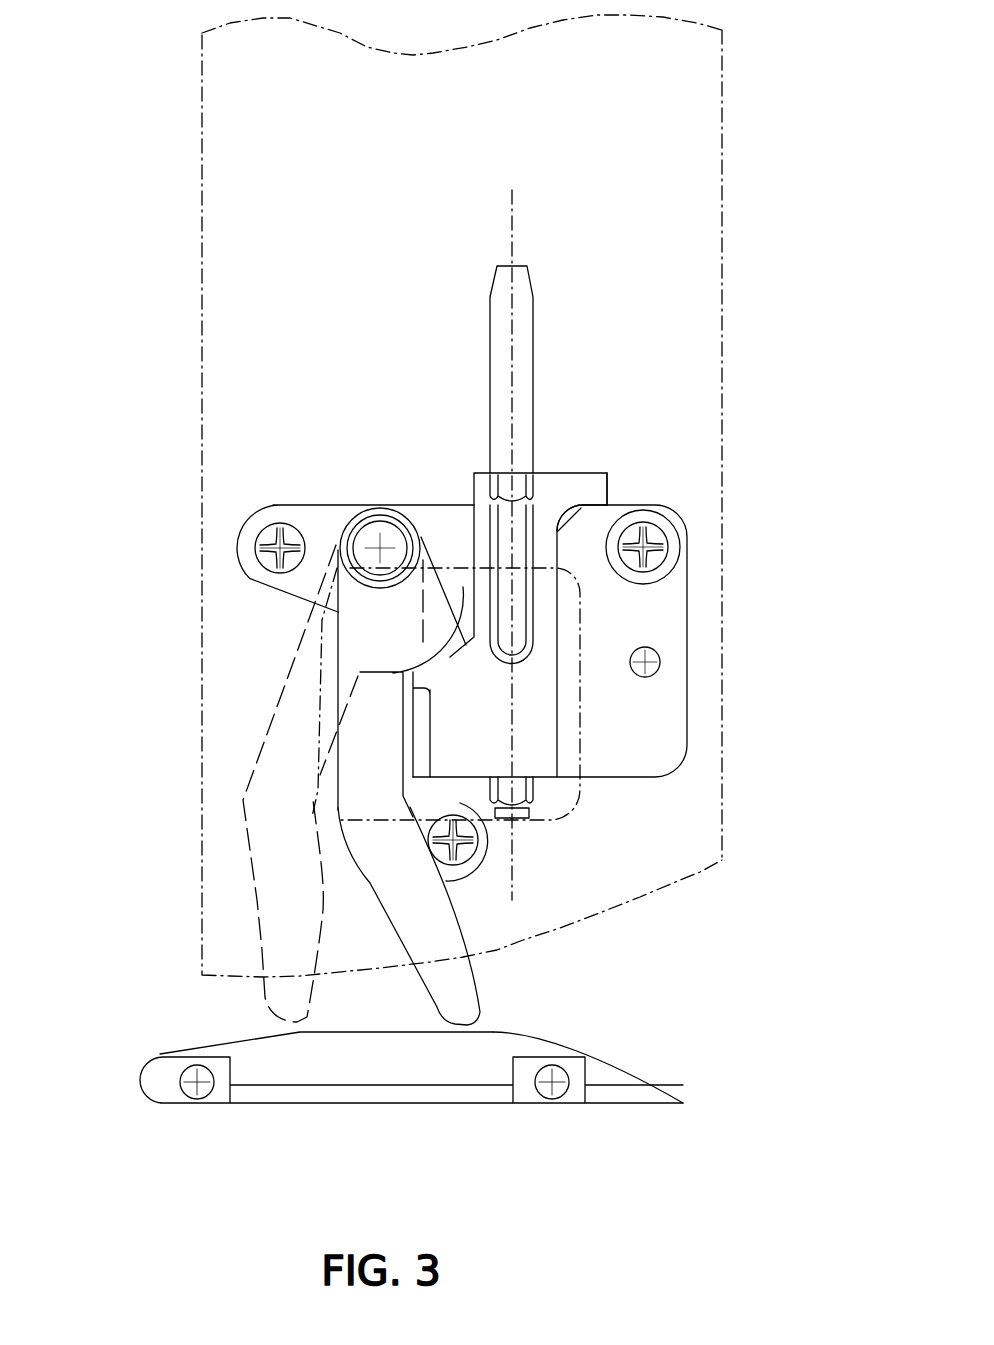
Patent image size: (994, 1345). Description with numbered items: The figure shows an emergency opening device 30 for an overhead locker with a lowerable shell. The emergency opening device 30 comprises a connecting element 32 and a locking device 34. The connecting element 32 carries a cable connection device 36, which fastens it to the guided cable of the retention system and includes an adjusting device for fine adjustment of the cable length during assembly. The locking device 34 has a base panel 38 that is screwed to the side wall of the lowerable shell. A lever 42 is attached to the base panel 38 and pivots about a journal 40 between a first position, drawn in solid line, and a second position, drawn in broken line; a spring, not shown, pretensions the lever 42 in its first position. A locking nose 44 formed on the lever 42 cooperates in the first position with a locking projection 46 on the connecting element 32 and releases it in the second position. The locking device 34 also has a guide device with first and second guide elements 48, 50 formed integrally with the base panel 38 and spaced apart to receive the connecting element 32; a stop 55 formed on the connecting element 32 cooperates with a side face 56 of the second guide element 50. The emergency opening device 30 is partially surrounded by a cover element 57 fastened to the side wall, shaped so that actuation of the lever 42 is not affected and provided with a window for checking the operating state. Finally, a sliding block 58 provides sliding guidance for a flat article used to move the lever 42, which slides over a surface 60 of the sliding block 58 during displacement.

The emergency opening device 30 is at (213, 443).
The connecting element 32 is at (537, 680).
The locking device 34 is at (265, 692).
The cable connection device 36 is at (522, 392).
The base panel 38 is at (320, 525).
The journal 40 is at (385, 532).
The lever 42 is at (340, 772).
The locking nose 44 is at (470, 648).
The locking projection 46 is at (450, 657).
The first guide element 48 is at (468, 848).
The second guide element 50 is at (635, 605).
The stop 55 is at (593, 485).
The side face 56 is at (620, 507).
The cover element 57 is at (243, 176).
The sliding block 58 is at (414, 1067).
The surface 60 is at (570, 1040).